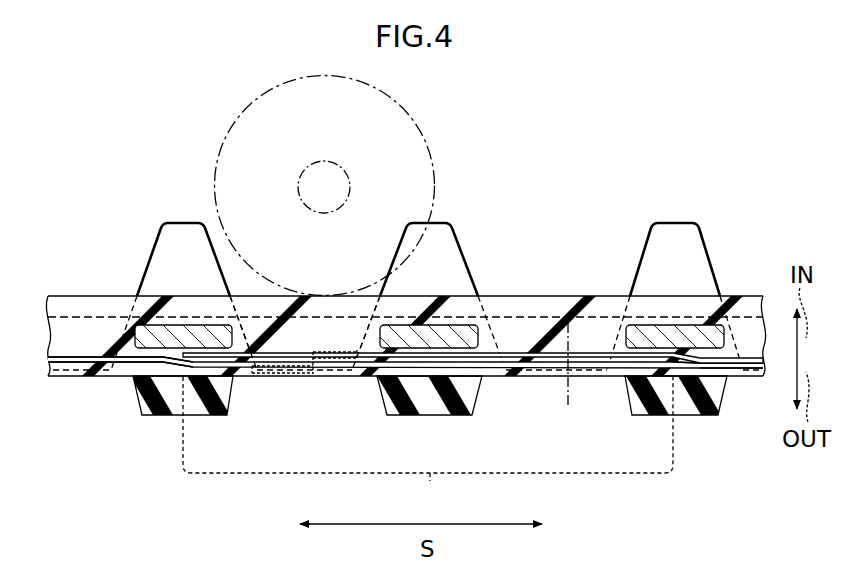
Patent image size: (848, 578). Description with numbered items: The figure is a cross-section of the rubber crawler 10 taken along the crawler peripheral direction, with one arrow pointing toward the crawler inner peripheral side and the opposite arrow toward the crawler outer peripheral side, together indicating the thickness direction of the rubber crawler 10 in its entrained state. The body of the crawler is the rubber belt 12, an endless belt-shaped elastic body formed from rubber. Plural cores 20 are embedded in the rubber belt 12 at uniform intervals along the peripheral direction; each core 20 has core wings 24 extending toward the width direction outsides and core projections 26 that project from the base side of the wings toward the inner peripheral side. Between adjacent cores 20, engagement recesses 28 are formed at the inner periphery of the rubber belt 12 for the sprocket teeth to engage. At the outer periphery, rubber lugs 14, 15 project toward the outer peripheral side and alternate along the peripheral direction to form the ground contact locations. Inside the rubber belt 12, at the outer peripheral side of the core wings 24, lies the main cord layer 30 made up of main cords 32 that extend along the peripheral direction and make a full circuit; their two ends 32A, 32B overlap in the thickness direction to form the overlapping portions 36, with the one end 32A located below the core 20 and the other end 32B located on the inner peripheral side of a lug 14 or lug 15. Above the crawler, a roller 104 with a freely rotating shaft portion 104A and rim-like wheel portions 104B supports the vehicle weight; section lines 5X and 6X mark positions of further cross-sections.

The rubber crawler 10 is at (99, 177).
The rubber belt 12 is at (61, 294).
The lugs 14 is at (425, 417).
The lugs 15 is at (150, 417).
The cores 20 is at (188, 323).
The core wings 24 is at (399, 321).
The core projections 26 is at (457, 240).
The engagement recesses 28 is at (368, 336).
The main cord layer 30 is at (405, 362).
The main cords 32 is at (62, 374).
The one end of main cord 32A is at (682, 363).
The other end of main cord 32B is at (187, 360).
The overlapping portions 36 is at (428, 441).
The rollers 104 is at (563, 100).
The shaft portion 104A is at (345, 168).
The wheel portions 104B is at (405, 110).
The section 5X is at (277, 374).
The section 6X is at (566, 331).